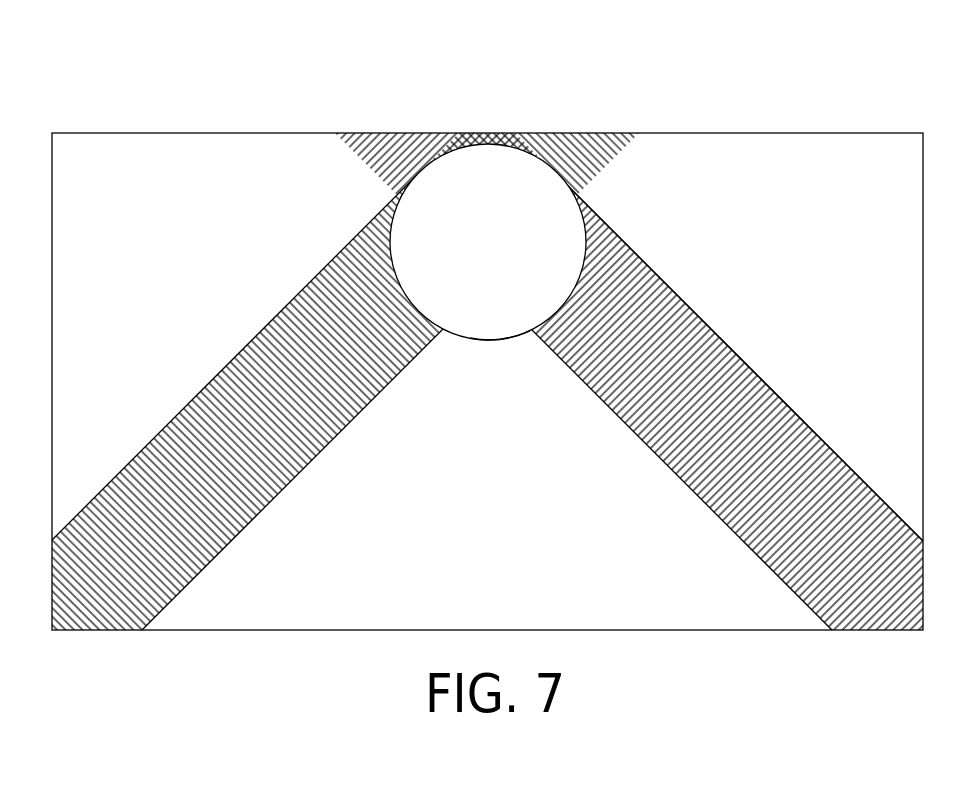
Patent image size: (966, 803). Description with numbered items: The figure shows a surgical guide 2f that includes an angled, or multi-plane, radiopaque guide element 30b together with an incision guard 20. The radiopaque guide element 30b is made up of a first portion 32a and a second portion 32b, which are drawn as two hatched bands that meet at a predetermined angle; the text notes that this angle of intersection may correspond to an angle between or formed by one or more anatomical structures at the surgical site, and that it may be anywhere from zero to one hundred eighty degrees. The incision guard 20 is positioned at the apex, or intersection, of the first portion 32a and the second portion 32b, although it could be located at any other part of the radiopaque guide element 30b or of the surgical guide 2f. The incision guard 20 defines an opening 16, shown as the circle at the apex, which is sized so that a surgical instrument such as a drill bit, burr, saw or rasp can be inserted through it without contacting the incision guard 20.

The surgical guide 2f is at (748, 115).
The opening 16 is at (492, 183).
The incision guard 20 is at (521, 337).
The radiopaque guide element 30b is at (638, 253).
The first portion 32a is at (210, 562).
The second portion 32b is at (738, 535).